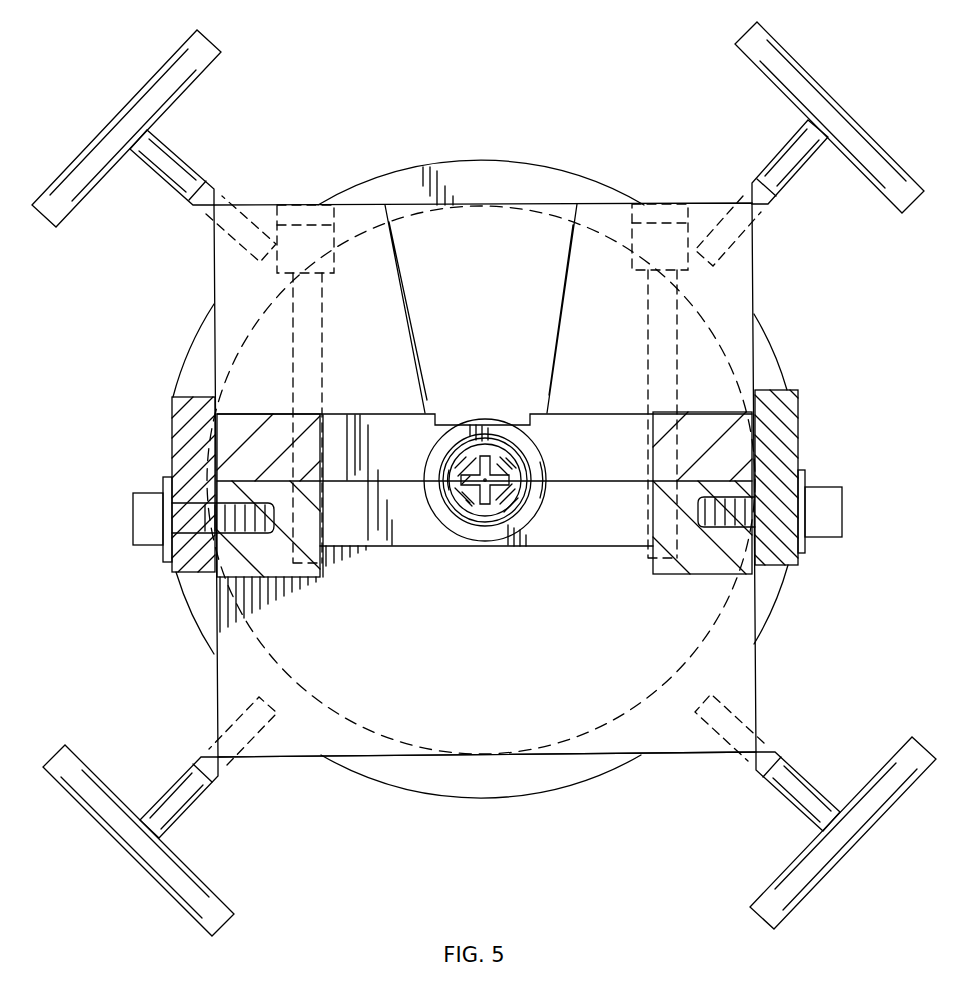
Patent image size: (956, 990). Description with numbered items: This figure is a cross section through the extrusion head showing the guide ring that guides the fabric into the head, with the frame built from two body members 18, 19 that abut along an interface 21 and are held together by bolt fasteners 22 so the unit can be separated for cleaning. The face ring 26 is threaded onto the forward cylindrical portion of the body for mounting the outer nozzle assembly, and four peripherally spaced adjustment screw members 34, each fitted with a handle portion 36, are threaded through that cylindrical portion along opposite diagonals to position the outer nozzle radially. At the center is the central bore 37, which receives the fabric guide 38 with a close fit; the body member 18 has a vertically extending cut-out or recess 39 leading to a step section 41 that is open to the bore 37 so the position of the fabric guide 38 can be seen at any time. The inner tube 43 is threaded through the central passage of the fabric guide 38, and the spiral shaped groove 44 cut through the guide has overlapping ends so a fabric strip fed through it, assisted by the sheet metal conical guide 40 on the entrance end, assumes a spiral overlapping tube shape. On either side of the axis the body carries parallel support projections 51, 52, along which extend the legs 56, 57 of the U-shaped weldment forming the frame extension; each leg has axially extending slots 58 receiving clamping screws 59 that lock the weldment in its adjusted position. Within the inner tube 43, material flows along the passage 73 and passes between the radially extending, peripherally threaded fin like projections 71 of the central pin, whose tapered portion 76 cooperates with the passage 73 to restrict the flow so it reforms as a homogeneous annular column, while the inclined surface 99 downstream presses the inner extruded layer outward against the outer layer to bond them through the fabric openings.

The body member 18 is at (748, 280).
The body member 19 is at (748, 688).
The interface 21 is at (615, 483).
The bolt fasteners 22 is at (320, 343).
The face ring 26 is at (493, 785).
The adjustment screw members 34 is at (192, 180).
The handle portion 36 is at (197, 895).
The central bore 37 is at (538, 508).
The fabric guide 38 is at (458, 422).
The cut-out or recess 39 is at (562, 312).
The conical guide 40 is at (447, 502).
The step section 41 is at (525, 443).
The inner tube 43 is at (490, 433).
The spiral shaped groove 44 is at (443, 485).
The support projection 51 is at (705, 423).
The support projection 52 is at (252, 423).
The leg 56 is at (783, 417).
The leg 57 is at (180, 413).
The axially extending slots 58 is at (800, 502).
The clamping screws 59 is at (830, 508).
The fin like projections 71 is at (505, 465).
The passage 73 is at (468, 465).
The tapered portion 76 is at (470, 507).
The inclined surface 99 is at (500, 500).